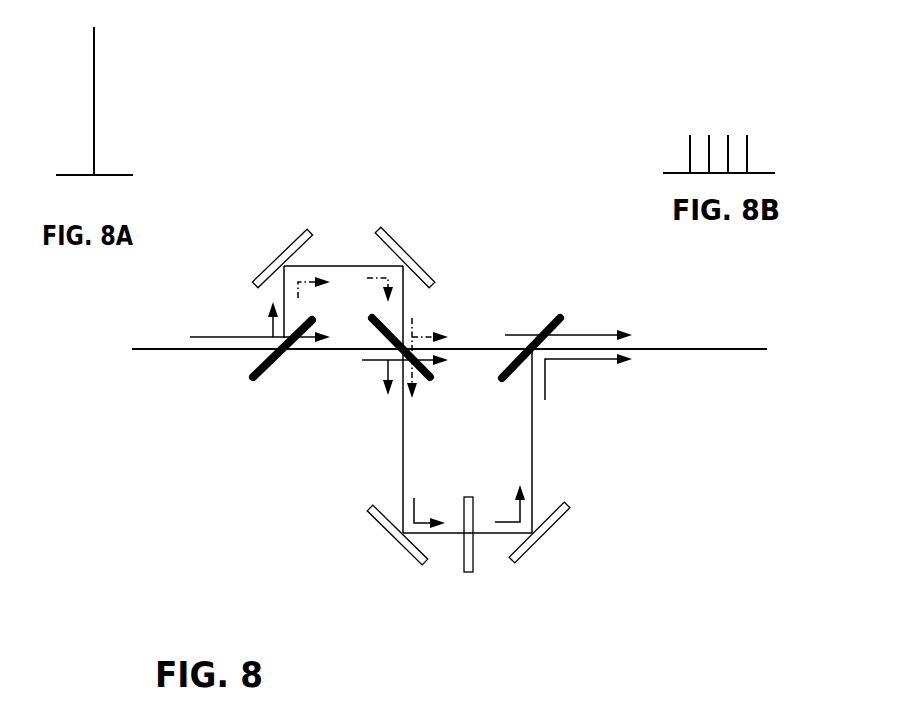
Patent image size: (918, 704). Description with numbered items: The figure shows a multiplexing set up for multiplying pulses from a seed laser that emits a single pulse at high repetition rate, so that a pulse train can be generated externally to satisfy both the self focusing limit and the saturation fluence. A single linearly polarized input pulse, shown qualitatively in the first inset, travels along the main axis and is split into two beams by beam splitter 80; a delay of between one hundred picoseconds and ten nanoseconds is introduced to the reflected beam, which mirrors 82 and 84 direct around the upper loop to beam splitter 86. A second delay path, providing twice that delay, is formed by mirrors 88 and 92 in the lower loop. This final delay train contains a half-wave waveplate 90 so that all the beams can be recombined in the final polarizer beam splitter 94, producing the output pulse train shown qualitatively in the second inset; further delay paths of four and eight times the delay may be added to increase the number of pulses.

The beam splitter 80 is at (268, 367).
The mirror 82 is at (287, 247).
The mirror 84 is at (403, 250).
The beam splitter 86 is at (383, 328).
The mirror 88 is at (382, 530).
The λ/2 waveplate 90 is at (467, 573).
The mirror 92 is at (535, 550).
The polarizer beam splitter 94 is at (552, 322).